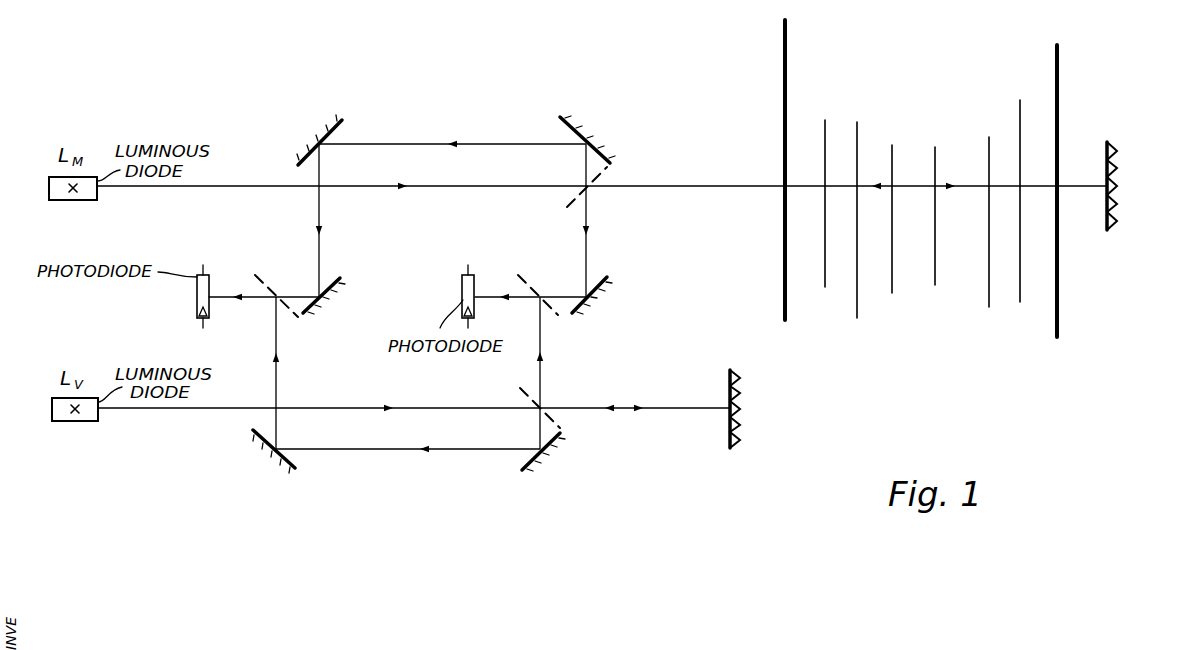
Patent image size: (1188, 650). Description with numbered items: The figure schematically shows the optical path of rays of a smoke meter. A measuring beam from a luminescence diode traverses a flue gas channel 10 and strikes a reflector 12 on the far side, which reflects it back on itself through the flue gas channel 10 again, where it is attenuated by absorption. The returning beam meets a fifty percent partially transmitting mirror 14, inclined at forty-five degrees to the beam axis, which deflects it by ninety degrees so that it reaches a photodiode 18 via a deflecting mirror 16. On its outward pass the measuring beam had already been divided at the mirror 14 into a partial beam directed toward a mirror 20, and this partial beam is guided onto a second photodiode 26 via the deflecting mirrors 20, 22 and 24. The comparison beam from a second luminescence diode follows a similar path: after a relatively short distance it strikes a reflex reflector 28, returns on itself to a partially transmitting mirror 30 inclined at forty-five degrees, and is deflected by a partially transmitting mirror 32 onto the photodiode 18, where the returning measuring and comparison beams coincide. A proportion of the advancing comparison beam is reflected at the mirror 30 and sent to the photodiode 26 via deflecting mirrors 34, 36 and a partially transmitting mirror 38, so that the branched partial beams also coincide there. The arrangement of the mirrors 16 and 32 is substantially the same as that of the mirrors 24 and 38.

The flue gas channel 10 is at (921, 178).
The reflector 12 is at (1110, 143).
The partially transmitting mirror 14 is at (594, 183).
The deflecting mirror 16 is at (598, 297).
The photodiode 18 is at (465, 292).
The deflecting mirror 20 is at (577, 127).
The deflecting mirror 22 is at (305, 145).
The deflecting mirror 24 is at (325, 302).
The second photodiode 26 is at (197, 288).
The reflex reflector 28 is at (740, 390).
The partially transmitting mirror 30 is at (530, 400).
The partially transmitting mirror 32 is at (525, 282).
The deflecting mirror 34 is at (530, 477).
The deflecting mirror 36 is at (285, 463).
The partially transmitting mirror 38 is at (255, 278).